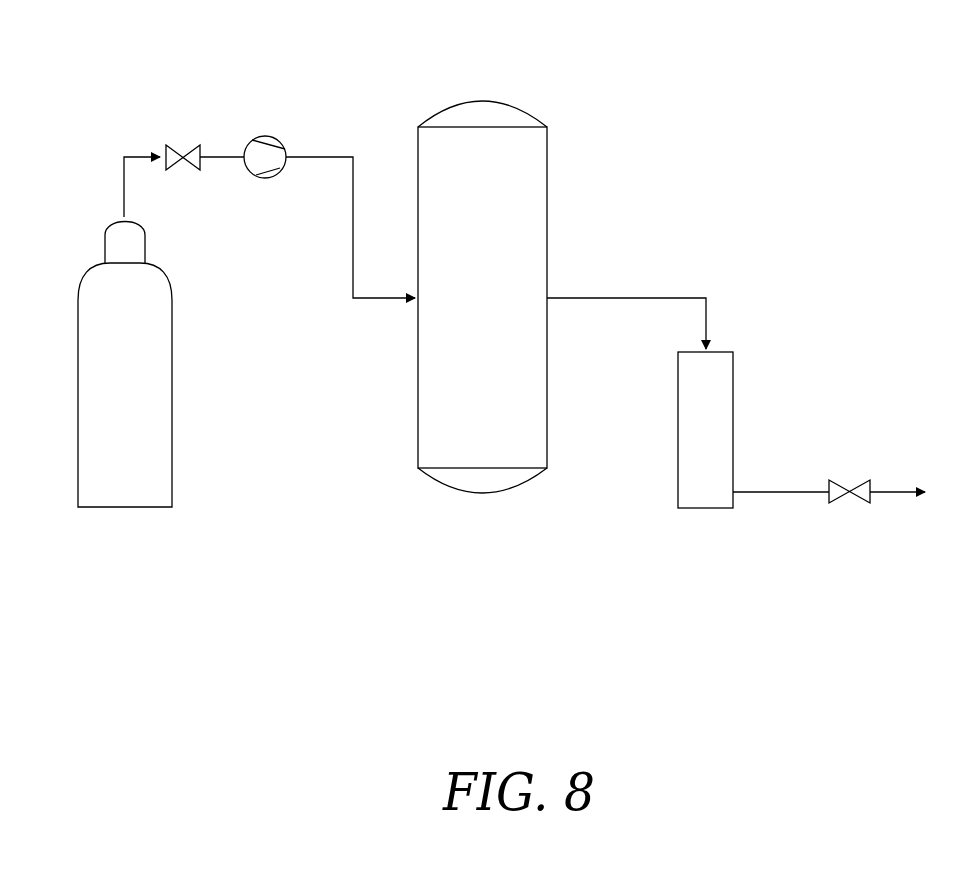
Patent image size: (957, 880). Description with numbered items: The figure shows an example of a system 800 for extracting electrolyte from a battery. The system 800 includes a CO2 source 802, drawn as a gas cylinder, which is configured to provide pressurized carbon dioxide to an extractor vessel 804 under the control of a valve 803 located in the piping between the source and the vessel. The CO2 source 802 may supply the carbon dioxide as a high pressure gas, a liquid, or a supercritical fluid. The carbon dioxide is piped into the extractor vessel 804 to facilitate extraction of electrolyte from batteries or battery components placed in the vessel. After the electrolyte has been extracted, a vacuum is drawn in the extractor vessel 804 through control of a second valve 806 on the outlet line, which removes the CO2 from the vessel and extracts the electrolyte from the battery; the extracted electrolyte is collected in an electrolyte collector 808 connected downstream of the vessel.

The system for extracting electrolyte from a battery 800 is at (805, 78).
The CO2 source 802 is at (172, 335).
The valve 803 is at (190, 130).
The extractor vessel 804 is at (547, 213).
The valve 806 is at (852, 478).
The electrolyte collector 808 is at (733, 365).